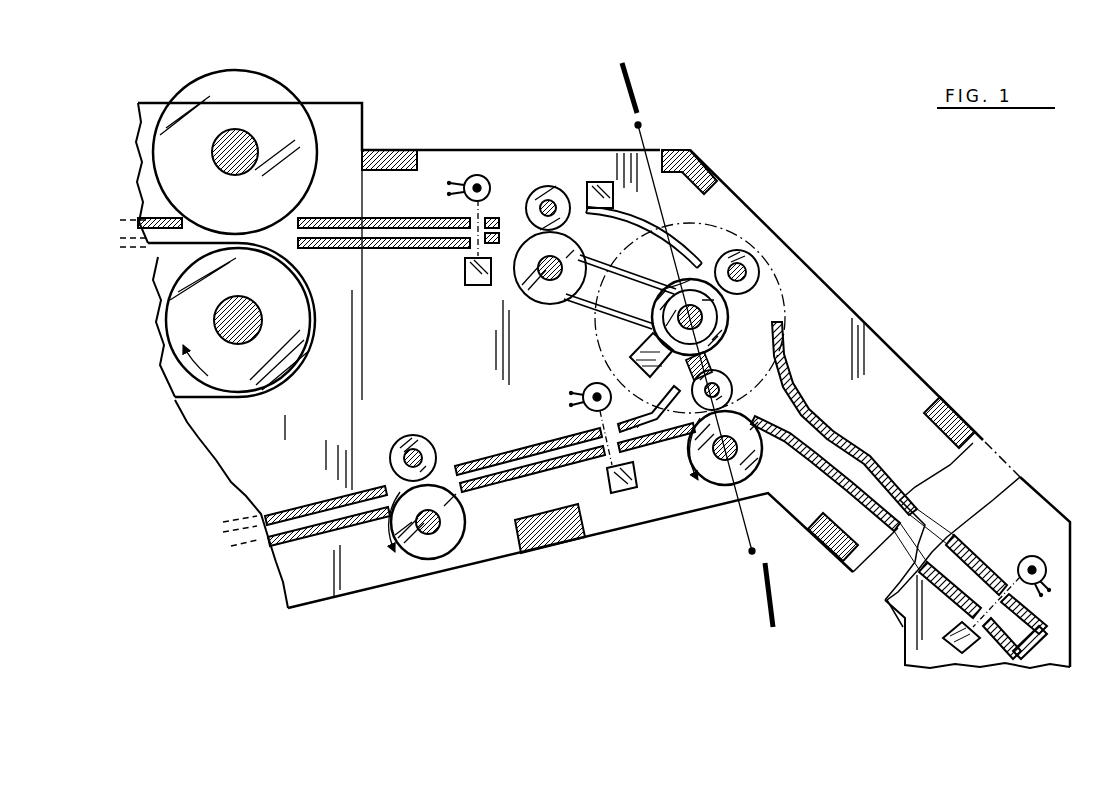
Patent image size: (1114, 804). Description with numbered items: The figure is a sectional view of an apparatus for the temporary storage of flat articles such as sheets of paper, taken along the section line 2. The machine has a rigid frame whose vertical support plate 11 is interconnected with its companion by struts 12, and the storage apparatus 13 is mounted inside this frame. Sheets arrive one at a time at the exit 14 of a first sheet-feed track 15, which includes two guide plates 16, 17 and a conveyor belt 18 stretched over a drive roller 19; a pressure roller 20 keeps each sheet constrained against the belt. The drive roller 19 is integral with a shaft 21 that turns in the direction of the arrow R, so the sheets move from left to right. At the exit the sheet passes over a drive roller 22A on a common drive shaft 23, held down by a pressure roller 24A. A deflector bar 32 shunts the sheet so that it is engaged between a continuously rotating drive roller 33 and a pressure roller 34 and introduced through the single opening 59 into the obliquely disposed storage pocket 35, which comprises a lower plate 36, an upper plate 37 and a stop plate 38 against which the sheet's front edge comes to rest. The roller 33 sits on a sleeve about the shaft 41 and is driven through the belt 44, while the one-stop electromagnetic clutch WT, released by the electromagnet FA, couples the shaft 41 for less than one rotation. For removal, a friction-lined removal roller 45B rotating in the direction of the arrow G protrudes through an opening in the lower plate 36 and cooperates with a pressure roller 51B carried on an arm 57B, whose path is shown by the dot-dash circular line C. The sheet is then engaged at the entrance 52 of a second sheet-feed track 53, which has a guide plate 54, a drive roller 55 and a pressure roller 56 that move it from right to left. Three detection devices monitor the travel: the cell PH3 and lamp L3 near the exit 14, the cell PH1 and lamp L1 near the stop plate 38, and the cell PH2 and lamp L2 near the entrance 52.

The vertical support plate 11 is at (735, 200).
The strut 12 is at (402, 150).
The storage apparatus 13 is at (830, 393).
The exit of first sheet-feed track 14 is at (496, 218).
The first sheet-feed track 15 is at (124, 214).
The guide plate 16 is at (320, 220).
The guide plate 17 is at (320, 248).
The conveyor belt 18 is at (150, 262).
The drive roller 19 is at (290, 380).
The pressure roller 20 is at (275, 100).
The shaft 21 is at (246, 308).
The drive roller 22A is at (562, 318).
The drive shaft 23 is at (554, 298).
The pressure roller 24A is at (548, 188).
The deflector bar 32 is at (655, 218).
The drive roller 33 is at (682, 278).
The pressure roller 34 is at (760, 272).
The storage pocket 35 is at (847, 467).
The lower plate 36 is at (852, 500).
The upper plate 37 is at (900, 490).
The stop plate 38 is at (1030, 656).
The shaft 41 is at (706, 317).
The belt 44 is at (612, 314).
The removal roller 45B is at (716, 470).
The pressure roller 51B is at (733, 398).
The entrance of second sheet-feed track 52 is at (600, 458).
The second sheet-feed track 53 is at (218, 538).
The guide plate 54 is at (518, 452).
The drive roller 55 is at (444, 548).
The pressure roller 56 is at (418, 436).
The arm 57B is at (712, 365).
The opening 59 is at (790, 370).
The circular line C is at (756, 232).
The electromagnet FA is at (652, 374).
The arrow G is at (683, 449).
The arrow R is at (195, 360).
The one-stop electromagnetic clutch WT is at (662, 305).
The lamp L1 is at (1046, 570).
The lamp L2 is at (584, 392).
The lamp L3 is at (478, 175).
The photoelectric cell PH1 is at (964, 655).
The photoelectric cell PH2 is at (622, 494).
The photoelectric cell PH3 is at (468, 283).
The section line 2 is at (678, 73).